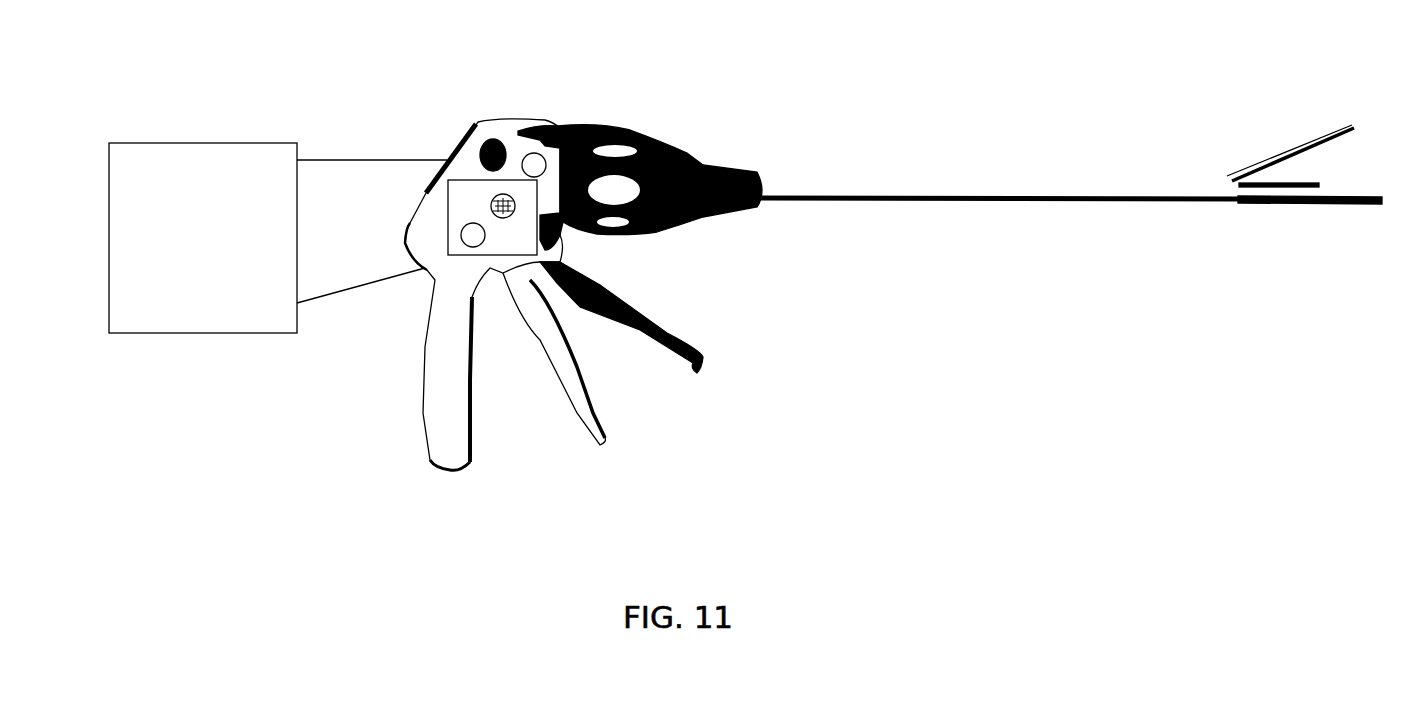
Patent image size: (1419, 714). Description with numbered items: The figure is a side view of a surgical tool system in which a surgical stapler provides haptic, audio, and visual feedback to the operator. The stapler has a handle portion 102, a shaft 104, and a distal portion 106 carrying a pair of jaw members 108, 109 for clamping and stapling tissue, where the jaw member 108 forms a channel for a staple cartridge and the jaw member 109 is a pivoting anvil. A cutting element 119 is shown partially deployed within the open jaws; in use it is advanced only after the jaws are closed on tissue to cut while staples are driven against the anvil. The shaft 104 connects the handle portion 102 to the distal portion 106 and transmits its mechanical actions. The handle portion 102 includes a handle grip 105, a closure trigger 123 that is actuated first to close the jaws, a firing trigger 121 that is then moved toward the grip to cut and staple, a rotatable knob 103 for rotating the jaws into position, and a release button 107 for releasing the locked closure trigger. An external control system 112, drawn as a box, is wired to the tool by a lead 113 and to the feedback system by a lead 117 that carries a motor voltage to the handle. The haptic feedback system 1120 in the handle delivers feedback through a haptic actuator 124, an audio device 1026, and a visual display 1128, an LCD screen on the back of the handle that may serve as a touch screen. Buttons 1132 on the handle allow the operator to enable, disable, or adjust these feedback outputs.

The handle portion 102 is at (682, 88).
The rotatable knob 103 is at (693, 210).
The shaft 104 is at (980, 187).
The handle grip 105 is at (437, 413).
The distal portion 106 is at (1208, 118).
The release button 107 is at (412, 223).
The jaw member 108 is at (1318, 203).
The jaw member (anvil) 109 is at (1280, 153).
The control system 112 is at (176, 251).
The lead 113 is at (377, 152).
The lead 117 is at (373, 288).
The cutting element 119 is at (1297, 181).
The firing trigger 121 is at (665, 353).
The closure trigger 123 is at (573, 410).
The haptic actuator 124 is at (485, 243).
The audio device 1026 is at (513, 213).
The haptic feedback system 1120 is at (460, 258).
The visual display 1128 is at (453, 150).
The buttons 1132 is at (528, 156).